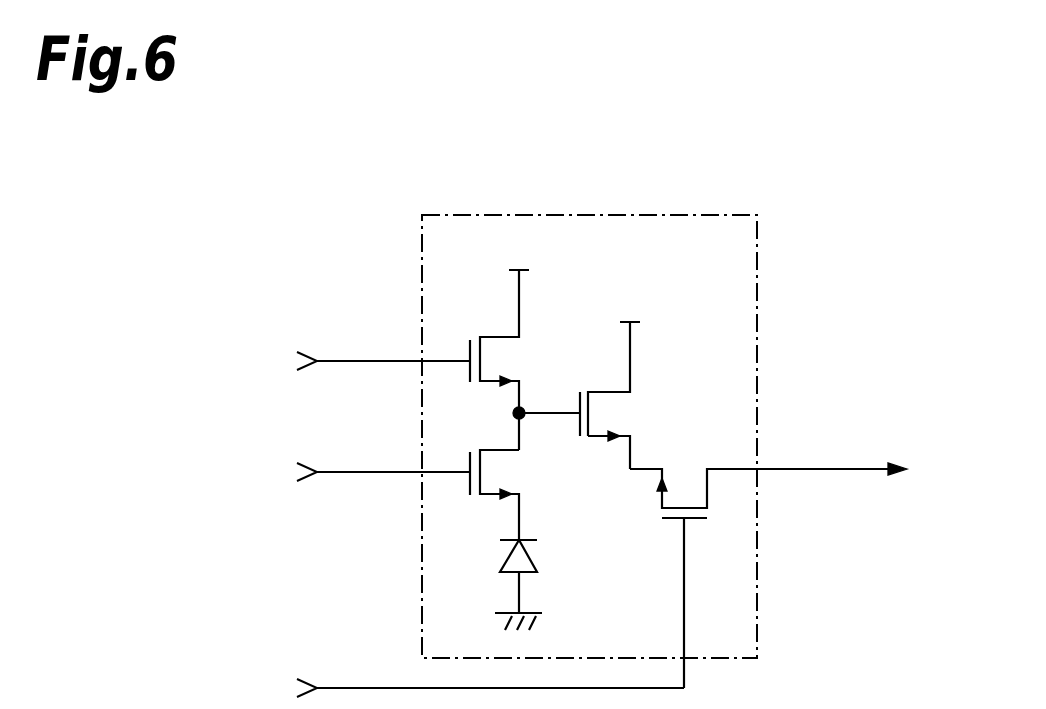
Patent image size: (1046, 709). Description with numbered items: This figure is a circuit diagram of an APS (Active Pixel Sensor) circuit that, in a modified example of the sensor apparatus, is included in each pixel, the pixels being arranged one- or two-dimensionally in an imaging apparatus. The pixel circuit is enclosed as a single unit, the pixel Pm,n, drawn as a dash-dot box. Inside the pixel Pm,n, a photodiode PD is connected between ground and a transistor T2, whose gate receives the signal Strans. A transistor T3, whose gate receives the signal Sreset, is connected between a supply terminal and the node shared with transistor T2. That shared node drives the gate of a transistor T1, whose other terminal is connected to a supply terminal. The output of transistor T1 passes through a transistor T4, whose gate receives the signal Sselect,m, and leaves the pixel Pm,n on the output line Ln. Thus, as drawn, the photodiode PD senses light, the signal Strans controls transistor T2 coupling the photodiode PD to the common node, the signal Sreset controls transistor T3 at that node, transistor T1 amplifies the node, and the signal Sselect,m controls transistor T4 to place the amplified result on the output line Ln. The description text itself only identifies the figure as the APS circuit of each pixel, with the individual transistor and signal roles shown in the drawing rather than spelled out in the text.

The pixel unit Pm,n is at (758, 262).
The amplifier transistor T1 is at (630, 395).
The transfer transistor T2 is at (519, 495).
The reset transistor T3 is at (519, 338).
The select transistor T4 is at (685, 556).
The photodiode PD is at (544, 585).
The reset signal Sreset is at (334, 361).
The transfer signal Strans is at (334, 473).
The select signal Sselect,m is at (425, 688).
The output line Ln is at (839, 491).